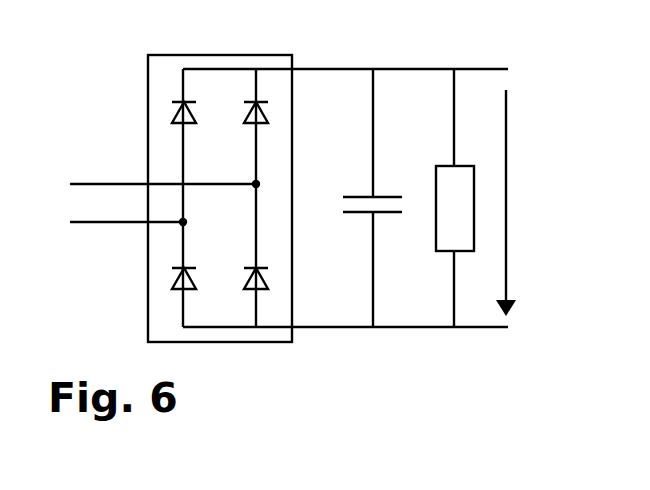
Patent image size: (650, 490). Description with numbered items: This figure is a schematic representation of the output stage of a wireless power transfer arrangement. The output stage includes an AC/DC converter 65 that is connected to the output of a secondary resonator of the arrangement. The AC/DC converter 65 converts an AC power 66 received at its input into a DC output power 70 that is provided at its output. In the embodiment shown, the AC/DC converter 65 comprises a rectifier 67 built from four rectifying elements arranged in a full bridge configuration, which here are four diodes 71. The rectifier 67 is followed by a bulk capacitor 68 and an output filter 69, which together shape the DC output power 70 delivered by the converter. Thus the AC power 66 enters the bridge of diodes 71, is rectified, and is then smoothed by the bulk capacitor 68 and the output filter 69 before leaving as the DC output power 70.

The AC/DC converter 65 is at (98, 108).
The AC power 66 is at (160, 203).
The rectifier 67 is at (292, 55).
The bulk capacitor 68 is at (351, 195).
The output filter 69 is at (428, 165).
The DC output power 70 is at (506, 160).
The diodes 71 is at (255, 125).